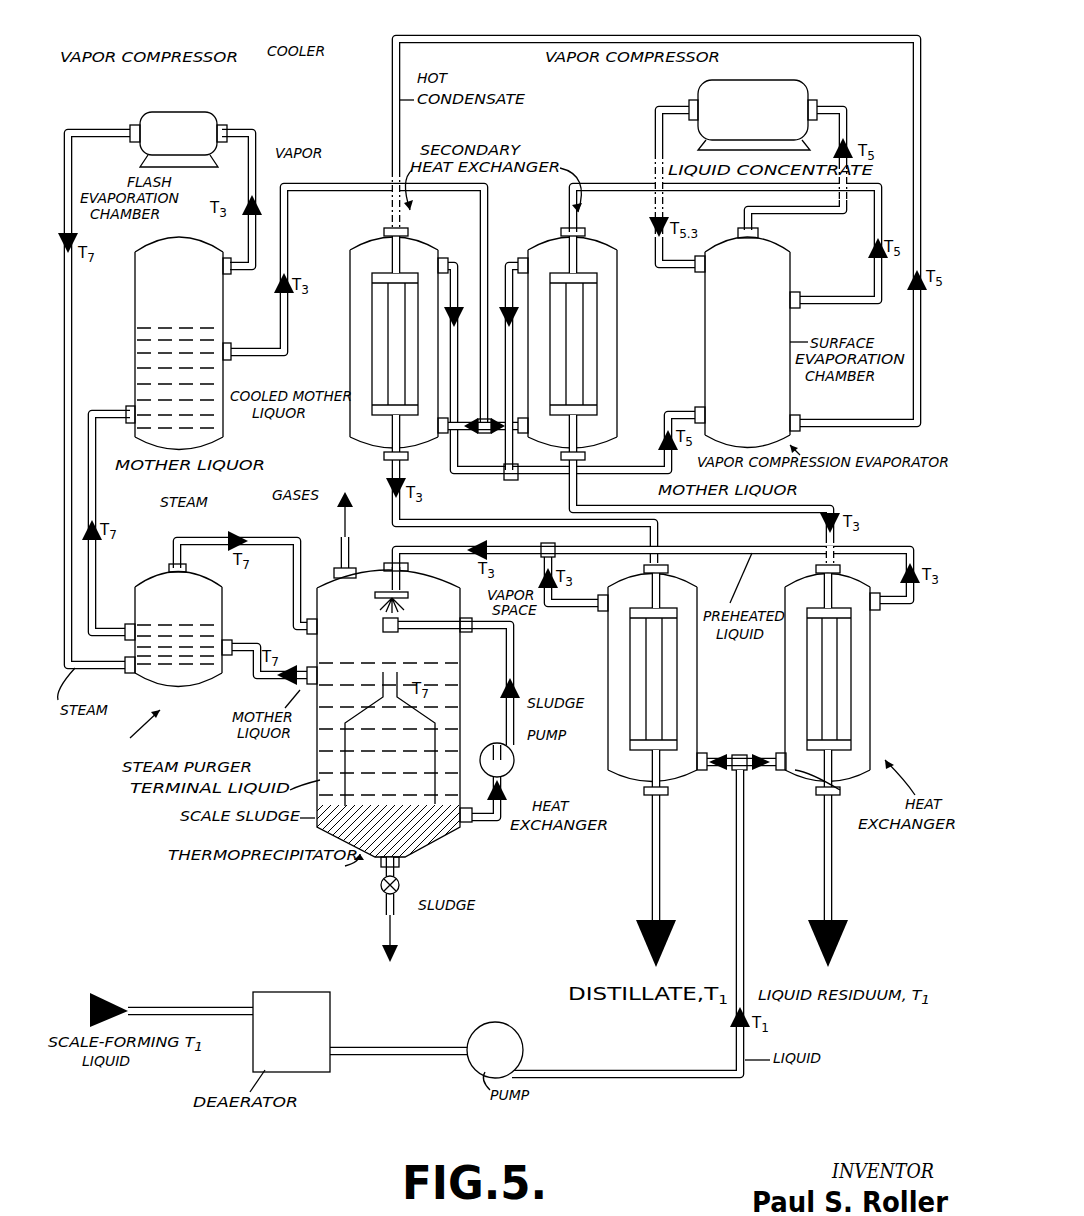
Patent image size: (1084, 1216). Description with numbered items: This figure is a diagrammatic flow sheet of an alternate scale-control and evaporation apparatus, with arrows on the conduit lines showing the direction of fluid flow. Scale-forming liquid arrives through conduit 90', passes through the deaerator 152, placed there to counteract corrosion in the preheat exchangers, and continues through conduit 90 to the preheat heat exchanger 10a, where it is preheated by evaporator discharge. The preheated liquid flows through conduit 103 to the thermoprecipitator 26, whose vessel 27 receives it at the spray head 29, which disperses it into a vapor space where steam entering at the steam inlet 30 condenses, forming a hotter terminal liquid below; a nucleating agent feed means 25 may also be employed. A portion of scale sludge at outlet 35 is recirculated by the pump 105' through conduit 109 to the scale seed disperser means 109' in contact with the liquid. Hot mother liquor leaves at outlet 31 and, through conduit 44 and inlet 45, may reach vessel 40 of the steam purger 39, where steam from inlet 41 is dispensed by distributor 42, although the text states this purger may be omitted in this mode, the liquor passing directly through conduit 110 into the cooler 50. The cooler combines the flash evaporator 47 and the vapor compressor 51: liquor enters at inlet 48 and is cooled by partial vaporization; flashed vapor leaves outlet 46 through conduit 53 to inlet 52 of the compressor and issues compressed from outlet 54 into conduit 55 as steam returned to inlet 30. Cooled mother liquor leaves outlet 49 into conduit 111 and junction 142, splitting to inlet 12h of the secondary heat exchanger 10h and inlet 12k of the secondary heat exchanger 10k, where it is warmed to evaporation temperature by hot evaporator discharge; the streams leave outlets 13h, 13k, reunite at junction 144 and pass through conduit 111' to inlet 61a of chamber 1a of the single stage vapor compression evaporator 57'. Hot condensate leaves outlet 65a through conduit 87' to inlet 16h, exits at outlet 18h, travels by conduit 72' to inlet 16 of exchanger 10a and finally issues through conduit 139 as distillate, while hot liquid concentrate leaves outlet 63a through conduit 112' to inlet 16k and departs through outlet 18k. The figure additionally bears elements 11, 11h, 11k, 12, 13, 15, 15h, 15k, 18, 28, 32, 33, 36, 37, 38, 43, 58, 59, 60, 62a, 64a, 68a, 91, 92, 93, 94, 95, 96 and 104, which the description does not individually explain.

The chamber 1a is at (748, 334).
The secondary heat exchanger 10h is at (376, 345).
The secondary heat exchanger 10k is at (588, 335).
The preheat heat exchanger 10a is at (648, 681).
The heat exchanger shell 11 is at (670, 678).
The heat exchanger shell 11h is at (350, 345).
The heat exchanger shell 11k is at (622, 302).
The outlet 12 is at (710, 778).
The inlet 12h is at (440, 440).
The inlet 12k is at (522, 436).
The inlet 13 is at (586, 617).
The outlet 13h is at (466, 238).
The outlet 13k is at (520, 242).
The tube bundle 15 is at (680, 679).
The tube bundle 15h is at (372, 380).
The tube bundle 15k is at (597, 382).
The inlet 16 is at (640, 581).
The inlet 16h is at (384, 231).
The inlet 16k is at (562, 230).
The outlet 18 is at (640, 779).
The outlet 18h is at (384, 458).
The outlet 18k is at (585, 457).
The nucleating agent feed means 25 is at (188, 562).
The thermoprecipitator 26 is at (372, 566).
The vessel 27 is at (394, 727).
The inlet 28 is at (408, 570).
The spray head 29 is at (408, 596).
The steam inlet 30 is at (316, 622).
The outlet 31 is at (312, 664).
The gas outlet 32 is at (340, 545).
The sludge valve 33 is at (378, 902).
The outlet 35 is at (465, 822).
The terminal liquid 36 is at (445, 740).
The baffle 37 is at (356, 668).
The inlet 38 is at (124, 640).
The steam purger 39 is at (164, 566).
The vessel 40 is at (154, 613).
The steam inlet 41 is at (128, 674).
The distributor 42 is at (175, 665).
The steam line 43 is at (245, 540).
The conduit 44 is at (270, 672).
The inlet 45 is at (232, 660).
The outlet 46 is at (231, 286).
The flash evaporator 47 is at (172, 343).
The inlet 48 is at (126, 408).
The outlet 49 is at (231, 362).
The cooler 50 is at (262, 108).
The vapor compressor 51 is at (174, 120).
The inlet 52 is at (222, 124).
The conduit 53 is at (246, 238).
The outlet 54 is at (132, 124).
The conduit 55 is at (72, 185).
The single stage vapor compression evaporator 57' is at (845, 71).
The vapor compressor 58 is at (720, 86).
The compressor outlet 59 is at (818, 104).
The compressor inlet 60 is at (694, 102).
The inlet 61a is at (698, 408).
The vapor outlet 62a is at (698, 272).
The outlet 63a is at (797, 308).
The compressed vapor inlet 64a is at (758, 232).
The outlet 65a is at (796, 416).
The compressed vapor line 68a is at (848, 168).
The conduit 72' is at (525, 512).
The conduit 87' is at (656, 231).
The conduit 90 is at (411, 1031).
The conduit 90' is at (171, 1022).
The pump 91 is at (522, 1045).
The liquid line 92 is at (744, 848).
The junction 93 is at (740, 755).
The valve 94 is at (720, 754).
The line 95 is at (579, 580).
The valve 96 is at (766, 742).
The conduit 103 is at (522, 550).
The junction 104 is at (555, 547).
The pump 105' is at (519, 780).
The conduit 109 is at (479, 685).
The scale seed disperser means 109' is at (412, 635).
The conduit 110 is at (95, 492).
The conduit 111 is at (356, 306).
The conduit 111' is at (607, 483).
The conduit 112' is at (725, 223).
The conduit 139 is at (641, 881).
The junction 142 is at (484, 435).
The junction 144 is at (511, 480).
The deaerator 152 is at (310, 1072).